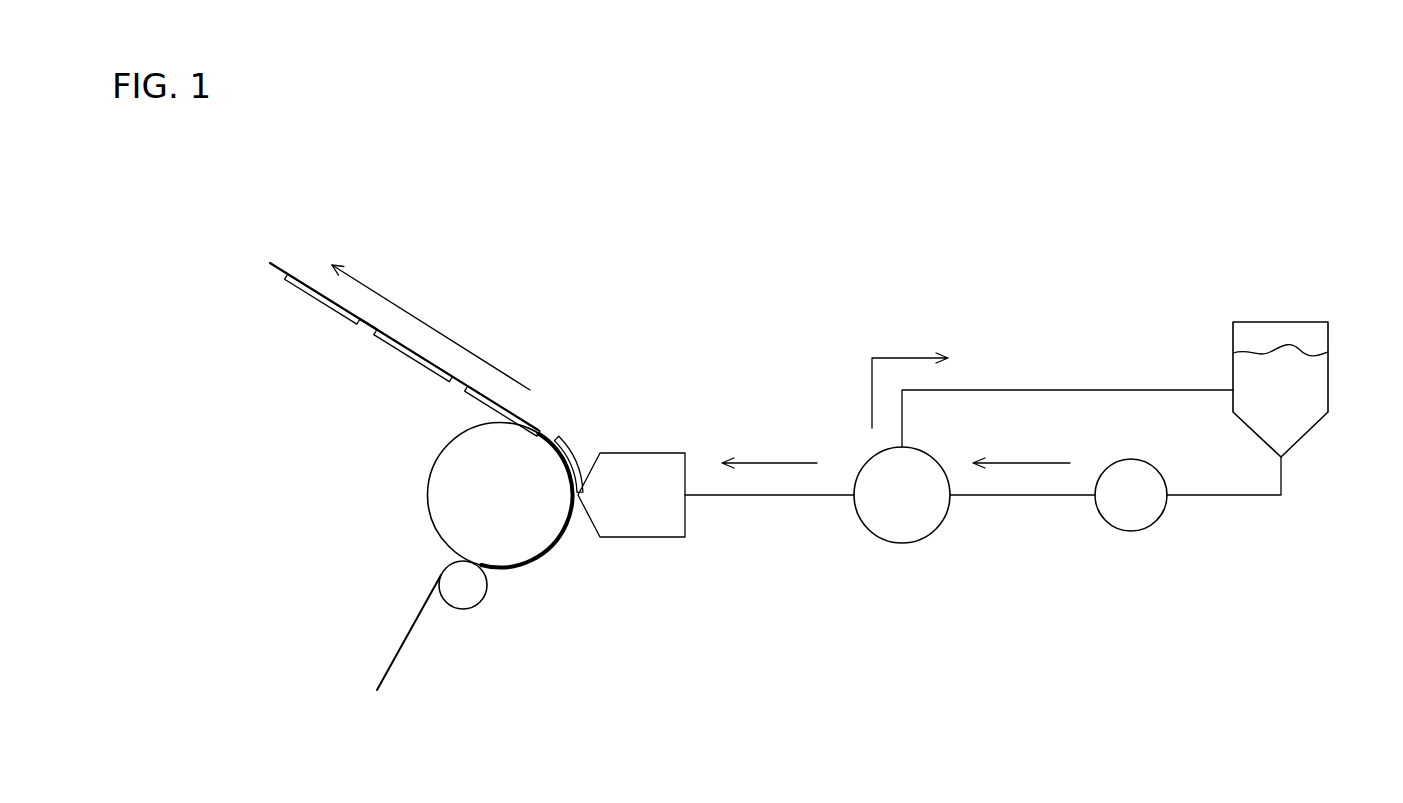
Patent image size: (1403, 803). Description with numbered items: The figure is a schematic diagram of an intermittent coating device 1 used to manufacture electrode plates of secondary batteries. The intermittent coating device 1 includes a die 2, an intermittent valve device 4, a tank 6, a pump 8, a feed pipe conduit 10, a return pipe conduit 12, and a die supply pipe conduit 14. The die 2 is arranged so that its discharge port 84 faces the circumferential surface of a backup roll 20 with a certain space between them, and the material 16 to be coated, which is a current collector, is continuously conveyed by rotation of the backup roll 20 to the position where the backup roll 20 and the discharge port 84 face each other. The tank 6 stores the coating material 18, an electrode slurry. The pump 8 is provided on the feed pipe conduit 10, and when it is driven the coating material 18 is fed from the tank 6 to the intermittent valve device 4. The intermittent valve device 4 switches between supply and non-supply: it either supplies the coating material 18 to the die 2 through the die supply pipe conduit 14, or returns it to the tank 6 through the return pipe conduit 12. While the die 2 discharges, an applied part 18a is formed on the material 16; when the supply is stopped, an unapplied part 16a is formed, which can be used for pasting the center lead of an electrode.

The intermittent coating device 1 is at (813, 797).
The die 2 is at (640, 538).
The intermittent valve device 4 is at (936, 534).
The tank 6 is at (1330, 377).
The pump 8 is at (1155, 523).
The feed pipe conduit 10 is at (1212, 497).
The return pipe conduit 12 is at (1088, 388).
The die supply pipe conduit 14 is at (768, 496).
The material to be coated 16 is at (397, 652).
The unapplied part 16a is at (372, 328).
The coating material 18 is at (1303, 350).
The applied part 18a is at (315, 293).
The backup roll 20 is at (445, 497).
The discharge port 84 is at (580, 495).